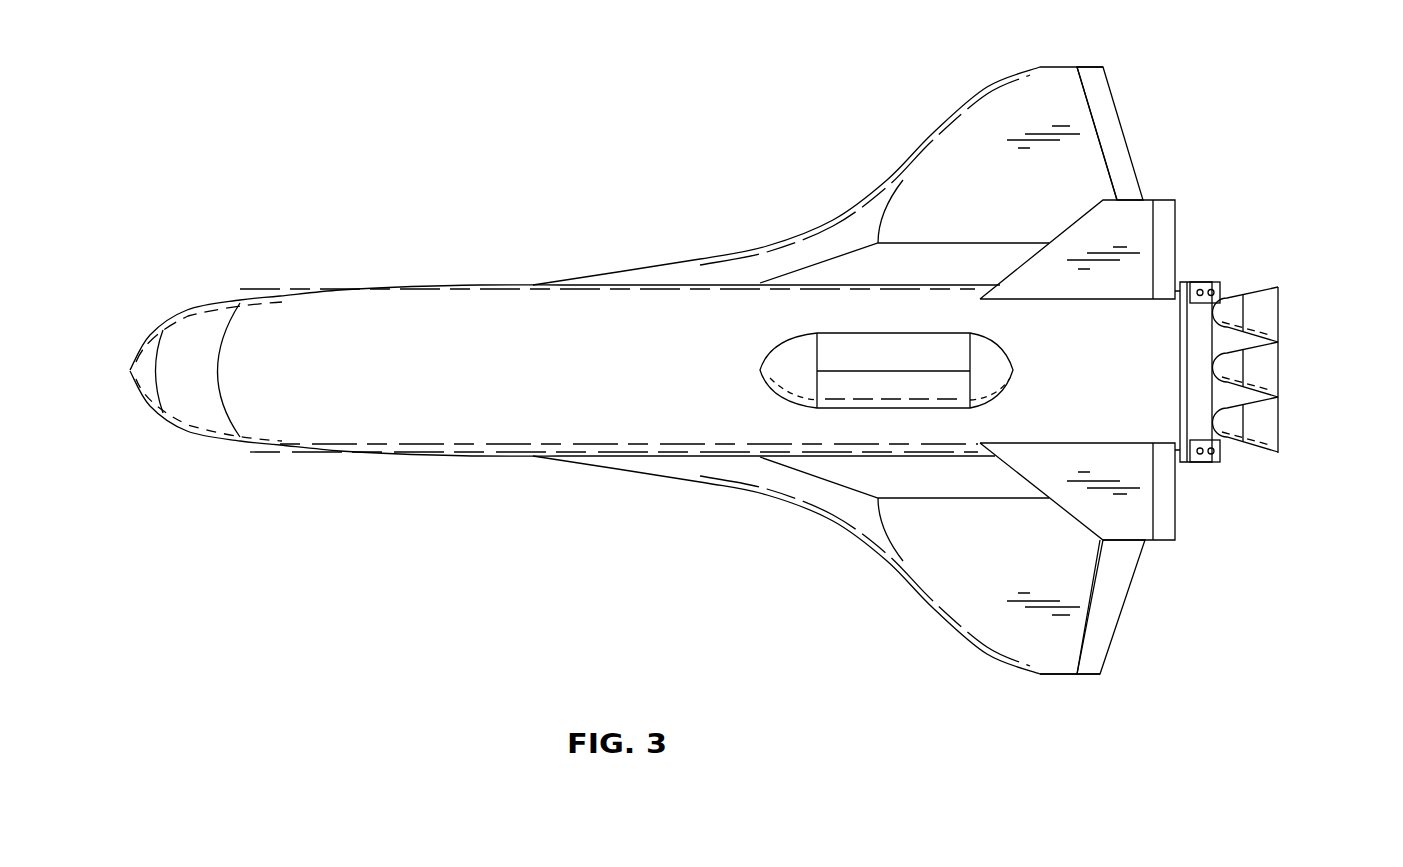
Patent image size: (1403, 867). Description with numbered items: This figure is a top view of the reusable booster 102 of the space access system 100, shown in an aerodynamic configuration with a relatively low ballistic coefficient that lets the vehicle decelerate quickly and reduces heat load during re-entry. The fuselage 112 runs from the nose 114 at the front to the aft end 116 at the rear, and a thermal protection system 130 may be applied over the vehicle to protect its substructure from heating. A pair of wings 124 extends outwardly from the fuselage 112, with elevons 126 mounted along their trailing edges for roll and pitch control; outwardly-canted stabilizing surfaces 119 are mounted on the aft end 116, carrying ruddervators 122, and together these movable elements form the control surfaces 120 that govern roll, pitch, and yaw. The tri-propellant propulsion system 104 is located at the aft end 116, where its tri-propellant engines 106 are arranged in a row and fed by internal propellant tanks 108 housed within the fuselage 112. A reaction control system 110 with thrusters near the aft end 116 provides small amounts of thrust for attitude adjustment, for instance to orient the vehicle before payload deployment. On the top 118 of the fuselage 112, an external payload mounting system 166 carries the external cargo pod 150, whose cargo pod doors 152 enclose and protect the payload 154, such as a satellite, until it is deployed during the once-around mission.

The space access system 100 is at (297, 288).
The reusable booster 102 is at (395, 287).
The tri-propellant propulsion system 104 is at (1277, 280).
The tri-propellant engines 106 is at (1278, 417).
The internal propellant tanks 108 is at (583, 316).
The reaction control system 110 is at (1208, 284).
The fuselage 112 is at (492, 312).
The nose 114 is at (130, 369).
The aft end 116 is at (1180, 422).
The top 118 is at (695, 332).
The stabilizing surfaces 119 is at (1127, 213).
The control surfaces 120 is at (1097, 98).
The ruddervators 122 is at (1165, 220).
The wings 124 is at (912, 580).
The elevons 126 is at (1107, 130).
The thermal protection system 130 is at (218, 437).
The external cargo pod 150 is at (790, 328).
The cargo pod doors 152 is at (851, 340).
The payload 154 is at (928, 345).
The external payload mounting system 166 is at (782, 398).